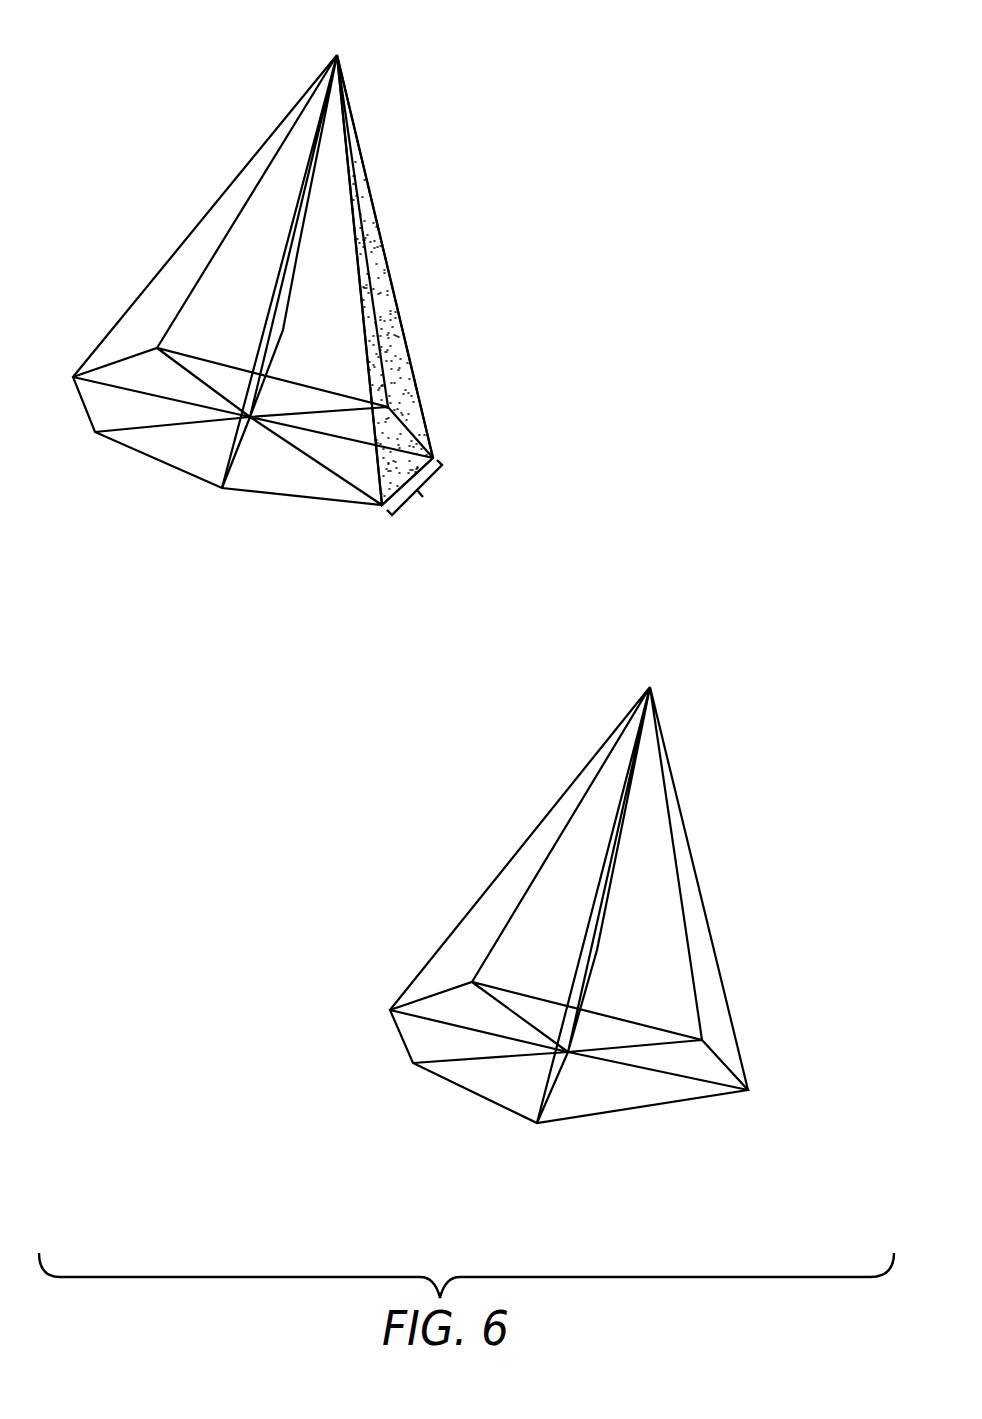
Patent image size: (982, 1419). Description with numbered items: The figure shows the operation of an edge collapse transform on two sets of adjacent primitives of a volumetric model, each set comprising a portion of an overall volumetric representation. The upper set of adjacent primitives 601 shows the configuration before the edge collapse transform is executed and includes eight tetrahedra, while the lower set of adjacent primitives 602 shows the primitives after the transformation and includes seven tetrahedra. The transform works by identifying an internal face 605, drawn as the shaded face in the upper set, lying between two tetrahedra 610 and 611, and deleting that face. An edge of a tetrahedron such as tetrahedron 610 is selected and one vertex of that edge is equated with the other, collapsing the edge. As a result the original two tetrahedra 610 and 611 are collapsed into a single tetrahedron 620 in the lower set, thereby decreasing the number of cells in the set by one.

The set of adjacent primitives 601 is at (315, 315).
The set of adjacent primitives 602 is at (576, 919).
The internal face 605 is at (386, 520).
The tetrahedron 610 is at (273, 503).
The tetrahedron 611 is at (427, 508).
The single tetrahedron 620 is at (637, 1122).